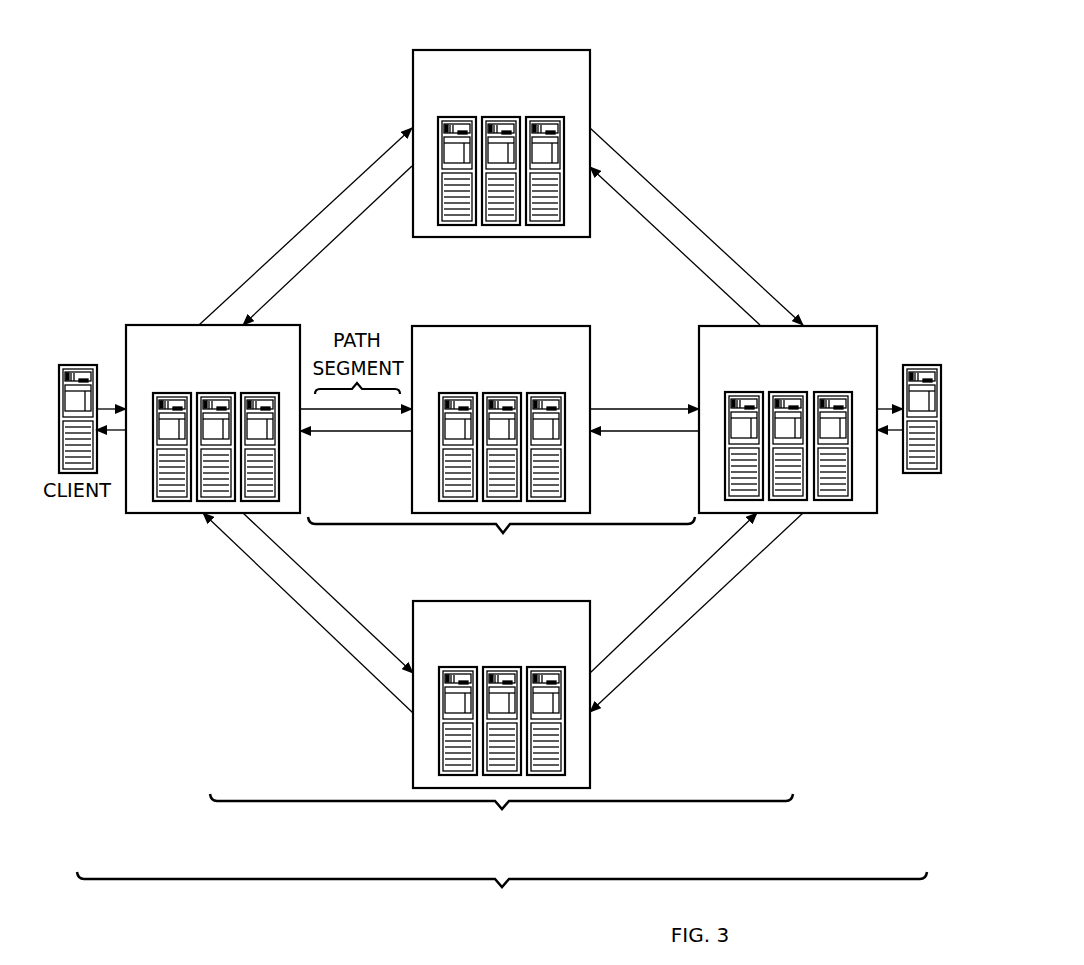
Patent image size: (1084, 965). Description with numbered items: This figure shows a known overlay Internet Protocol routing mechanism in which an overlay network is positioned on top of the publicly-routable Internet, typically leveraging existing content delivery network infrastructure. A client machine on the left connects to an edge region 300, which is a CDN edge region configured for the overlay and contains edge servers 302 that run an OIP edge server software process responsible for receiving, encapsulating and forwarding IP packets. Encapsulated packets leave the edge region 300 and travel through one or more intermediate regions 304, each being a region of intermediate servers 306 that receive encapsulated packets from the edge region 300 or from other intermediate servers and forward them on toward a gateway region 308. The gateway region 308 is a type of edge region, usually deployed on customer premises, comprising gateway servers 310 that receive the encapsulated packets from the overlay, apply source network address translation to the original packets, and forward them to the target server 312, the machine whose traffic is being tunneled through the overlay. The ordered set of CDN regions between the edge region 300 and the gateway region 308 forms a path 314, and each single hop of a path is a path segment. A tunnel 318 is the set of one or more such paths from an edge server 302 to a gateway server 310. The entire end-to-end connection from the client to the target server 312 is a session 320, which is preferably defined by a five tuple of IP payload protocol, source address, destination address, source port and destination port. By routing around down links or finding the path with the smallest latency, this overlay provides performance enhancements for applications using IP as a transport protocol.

The edge region 300 is at (167, 323).
The edge server 302 is at (170, 393).
The intermediate region 304 is at (452, 600).
The intermediate server 306 is at (457, 117).
The gateway region 308 is at (837, 324).
The gateway server 310 is at (788, 392).
The target server 312 is at (922, 365).
The path 314 is at (501, 554).
The tunnel 318 is at (501, 830).
The session 320 is at (502, 907).